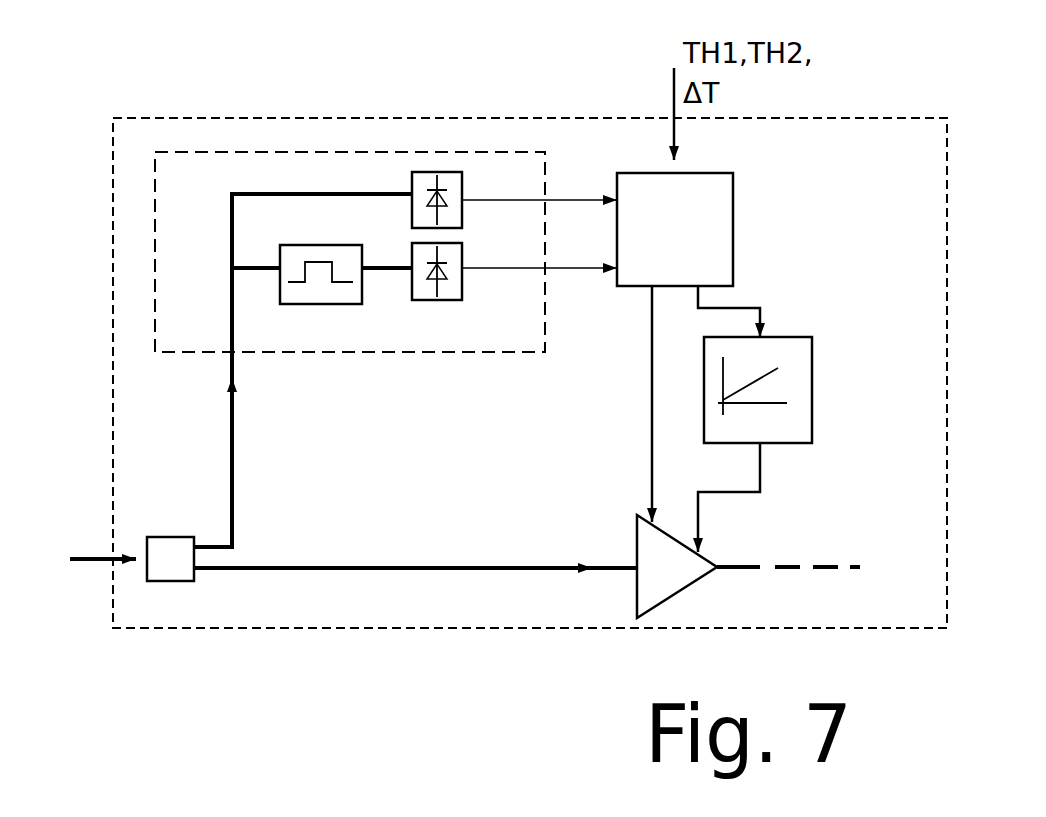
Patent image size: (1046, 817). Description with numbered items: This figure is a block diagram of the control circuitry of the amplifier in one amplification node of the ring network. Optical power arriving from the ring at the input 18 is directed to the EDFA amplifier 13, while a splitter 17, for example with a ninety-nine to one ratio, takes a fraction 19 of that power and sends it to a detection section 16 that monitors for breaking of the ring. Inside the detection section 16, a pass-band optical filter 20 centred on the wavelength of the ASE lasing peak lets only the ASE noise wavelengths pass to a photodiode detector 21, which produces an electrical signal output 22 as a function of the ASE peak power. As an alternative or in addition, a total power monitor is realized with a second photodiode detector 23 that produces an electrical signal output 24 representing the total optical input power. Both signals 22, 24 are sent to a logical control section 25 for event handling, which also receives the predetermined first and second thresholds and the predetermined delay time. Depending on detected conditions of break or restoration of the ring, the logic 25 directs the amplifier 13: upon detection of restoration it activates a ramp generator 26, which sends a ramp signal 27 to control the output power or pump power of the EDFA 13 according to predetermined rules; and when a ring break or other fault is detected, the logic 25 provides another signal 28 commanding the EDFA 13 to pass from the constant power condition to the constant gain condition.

The EDFA amplifier 13 is at (637, 540).
The detection section 16 is at (343, 153).
The splitter 17 is at (175, 542).
The input 18 is at (92, 559).
The fraction of optical power 19 is at (233, 497).
The pass-band optical filter 20 is at (313, 304).
The photodiode detector 21 is at (452, 297).
The electrical signal output 22 is at (580, 268).
The photodiode detector 23 is at (455, 176).
The electrical signal output 24 is at (573, 200).
The logical control section 25 is at (725, 252).
The ramp generator 26 is at (807, 425).
The ramp signal 27 is at (760, 471).
The control signal 28 is at (648, 435).